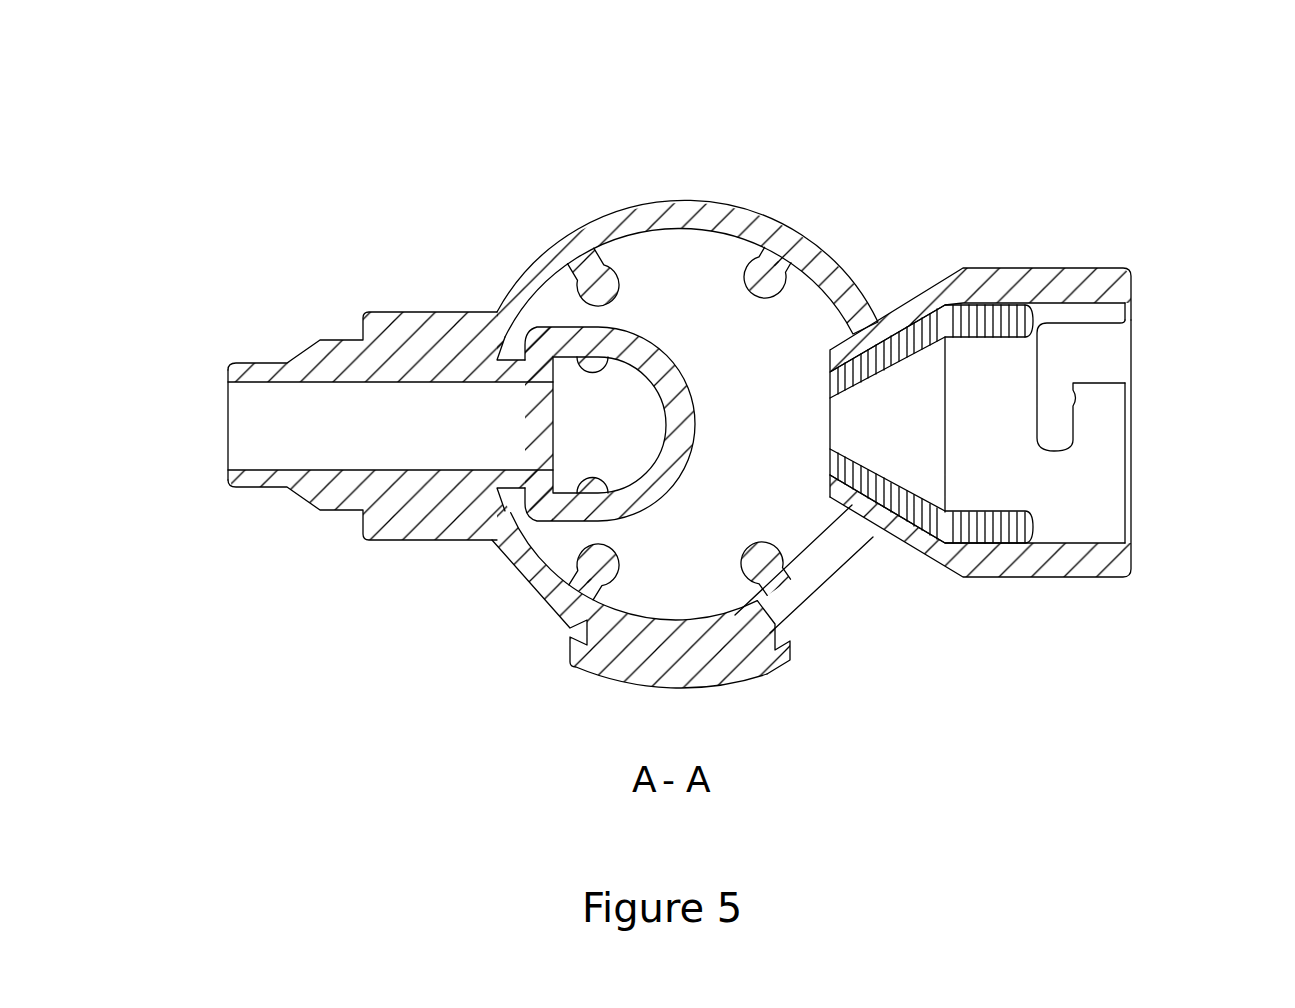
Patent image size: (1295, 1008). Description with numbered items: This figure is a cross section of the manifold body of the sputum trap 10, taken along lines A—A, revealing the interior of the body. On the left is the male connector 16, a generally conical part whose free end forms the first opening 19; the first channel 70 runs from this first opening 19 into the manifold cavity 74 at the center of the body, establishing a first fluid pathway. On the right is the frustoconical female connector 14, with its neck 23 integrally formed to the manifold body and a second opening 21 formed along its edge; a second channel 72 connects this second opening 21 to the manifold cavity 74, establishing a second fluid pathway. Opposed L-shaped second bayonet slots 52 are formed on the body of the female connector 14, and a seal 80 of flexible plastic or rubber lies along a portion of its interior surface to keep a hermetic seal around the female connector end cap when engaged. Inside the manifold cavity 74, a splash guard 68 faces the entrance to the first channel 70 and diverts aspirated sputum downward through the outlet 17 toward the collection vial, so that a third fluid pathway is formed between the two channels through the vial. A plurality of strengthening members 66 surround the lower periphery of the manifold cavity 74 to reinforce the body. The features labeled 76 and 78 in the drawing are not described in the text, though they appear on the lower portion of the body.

The sputum trap 10 is at (763, 108).
The female connector 14 is at (1046, 580).
The male connector 16 is at (387, 556).
The outlet 17 is at (582, 392).
The first opening 19 is at (218, 443).
The second opening 21 is at (1140, 413).
The neck 23 is at (915, 300).
The second bayonet slots 52 is at (1090, 362).
The strengthening members 66 is at (600, 263).
The splash guard 68 is at (655, 505).
The first channel 70 is at (316, 447).
The second channel 72 is at (927, 547).
The manifold cavity 74 is at (812, 338).
The outer surface 76 is at (748, 683).
The lower shell half 78 is at (792, 652).
The seal 80 is at (1034, 522).